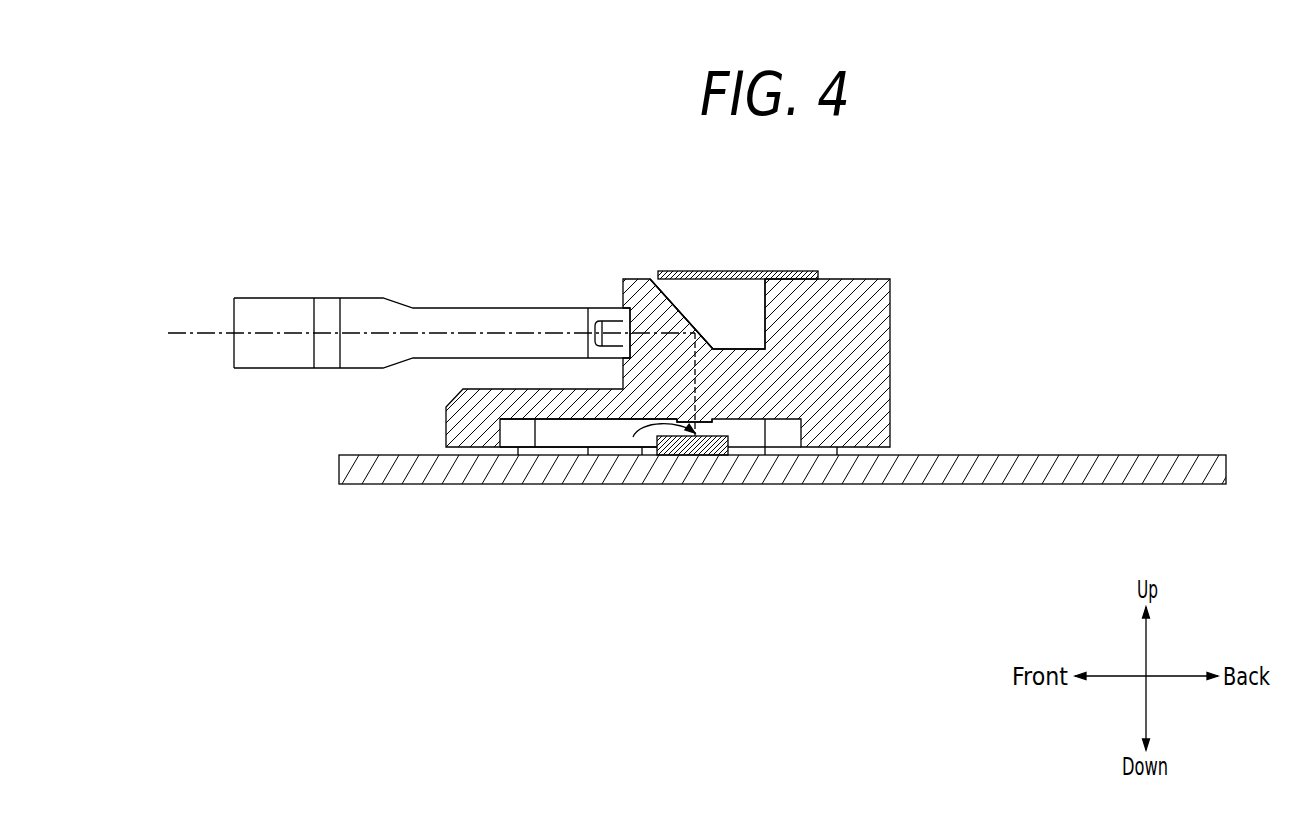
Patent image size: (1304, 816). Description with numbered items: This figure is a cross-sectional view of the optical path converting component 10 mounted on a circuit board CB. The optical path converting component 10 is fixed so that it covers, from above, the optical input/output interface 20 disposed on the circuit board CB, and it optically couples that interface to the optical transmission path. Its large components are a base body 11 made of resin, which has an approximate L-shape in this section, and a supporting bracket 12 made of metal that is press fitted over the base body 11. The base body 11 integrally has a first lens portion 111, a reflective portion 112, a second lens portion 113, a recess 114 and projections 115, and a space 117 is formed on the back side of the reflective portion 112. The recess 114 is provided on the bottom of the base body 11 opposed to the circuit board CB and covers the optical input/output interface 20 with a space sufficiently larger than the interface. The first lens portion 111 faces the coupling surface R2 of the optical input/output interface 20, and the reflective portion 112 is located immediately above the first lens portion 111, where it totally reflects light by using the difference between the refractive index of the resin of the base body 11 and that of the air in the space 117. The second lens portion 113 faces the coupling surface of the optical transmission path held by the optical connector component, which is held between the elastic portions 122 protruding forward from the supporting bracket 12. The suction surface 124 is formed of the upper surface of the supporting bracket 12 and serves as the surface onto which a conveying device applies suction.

The optical path converting component 10 is at (688, 212).
The base body 11 is at (887, 307).
The supporting bracket 12 is at (793, 273).
The optical input/output interface 20 is at (670, 453).
The first lens portion 111 is at (702, 425).
The reflective portion 112 is at (653, 278).
The second lens portion 113 is at (628, 334).
The recess 114 is at (562, 433).
The projections 115 is at (610, 325).
The space 117 is at (730, 313).
The elastic portion 122 is at (427, 319).
The suction surface 124 is at (760, 272).
The coupling surface R2 is at (633, 437).
The circuit board CB is at (1147, 465).